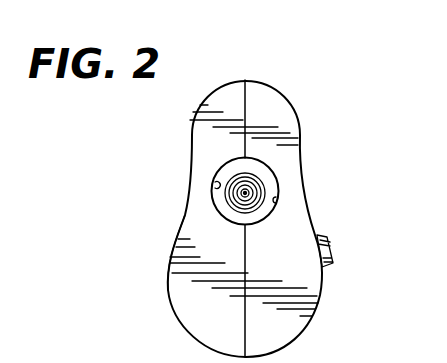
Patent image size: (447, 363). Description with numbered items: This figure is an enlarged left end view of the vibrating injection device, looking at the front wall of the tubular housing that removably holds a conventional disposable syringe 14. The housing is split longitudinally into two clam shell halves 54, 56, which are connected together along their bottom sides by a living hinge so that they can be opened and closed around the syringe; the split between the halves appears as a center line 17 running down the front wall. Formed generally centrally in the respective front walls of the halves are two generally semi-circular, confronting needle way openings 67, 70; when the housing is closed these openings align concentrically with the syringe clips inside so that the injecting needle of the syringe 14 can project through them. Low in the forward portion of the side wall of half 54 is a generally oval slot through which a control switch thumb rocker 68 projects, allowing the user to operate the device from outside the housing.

The disposable syringe 14 is at (266, 182).
The center seam line 17 is at (246, 97).
The clam shell half 54 is at (298, 333).
The clam shell half 56 is at (182, 301).
The needle way opening 67 is at (279, 198).
The control switch thumb rocker 68 is at (333, 249).
The needle way opening 70 is at (213, 188).